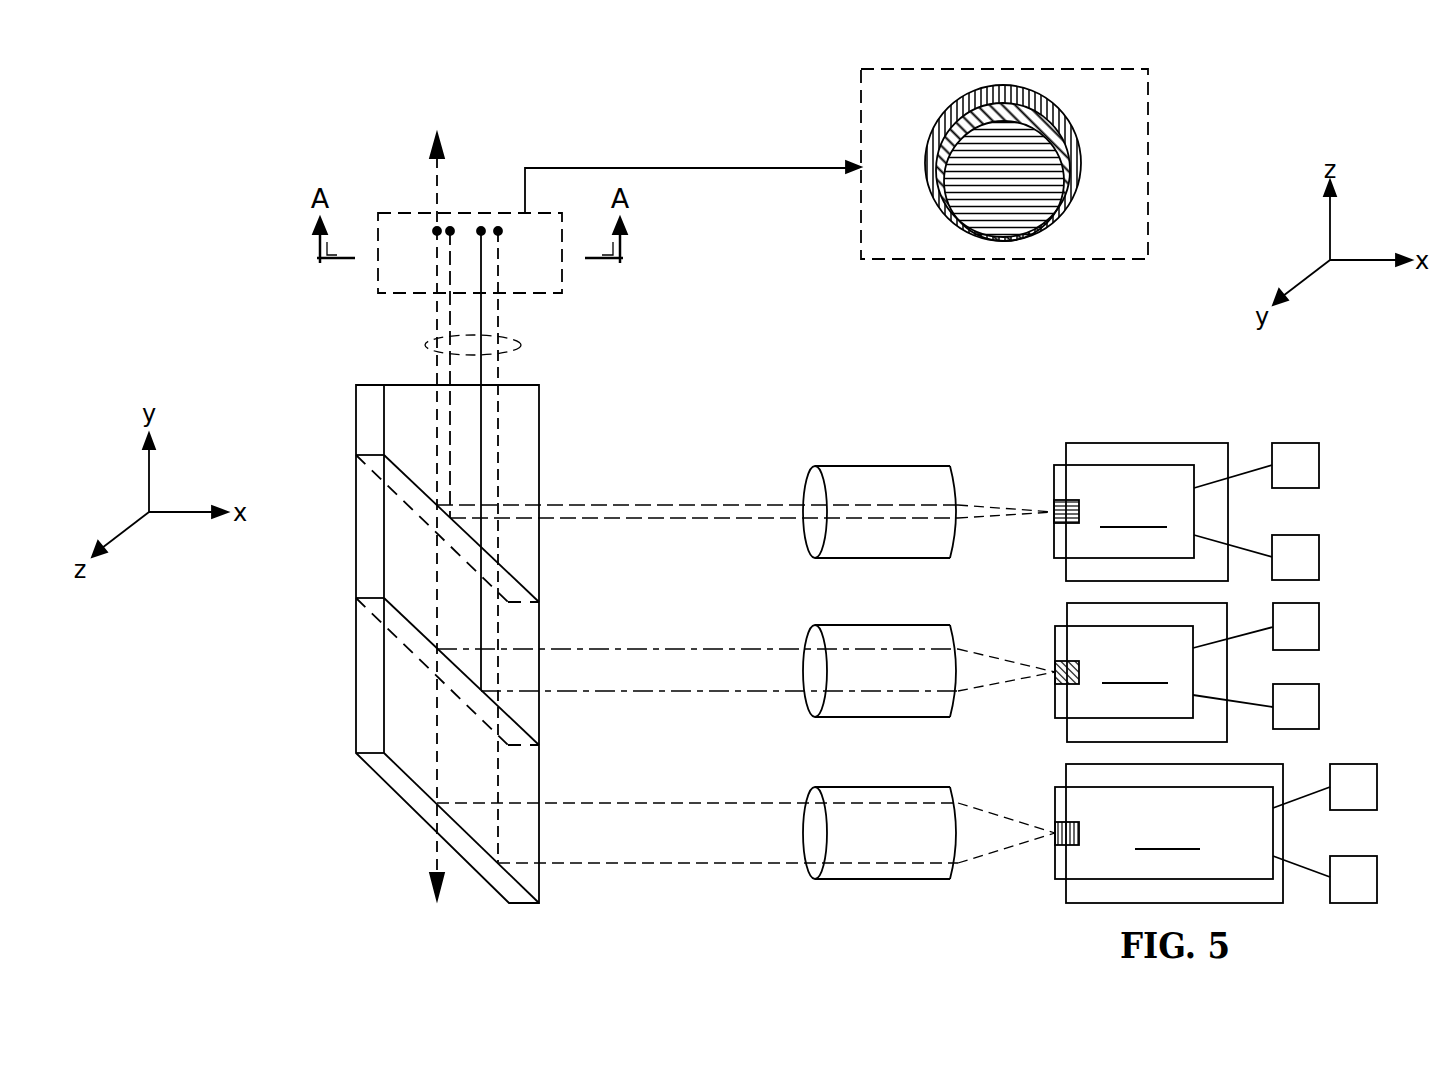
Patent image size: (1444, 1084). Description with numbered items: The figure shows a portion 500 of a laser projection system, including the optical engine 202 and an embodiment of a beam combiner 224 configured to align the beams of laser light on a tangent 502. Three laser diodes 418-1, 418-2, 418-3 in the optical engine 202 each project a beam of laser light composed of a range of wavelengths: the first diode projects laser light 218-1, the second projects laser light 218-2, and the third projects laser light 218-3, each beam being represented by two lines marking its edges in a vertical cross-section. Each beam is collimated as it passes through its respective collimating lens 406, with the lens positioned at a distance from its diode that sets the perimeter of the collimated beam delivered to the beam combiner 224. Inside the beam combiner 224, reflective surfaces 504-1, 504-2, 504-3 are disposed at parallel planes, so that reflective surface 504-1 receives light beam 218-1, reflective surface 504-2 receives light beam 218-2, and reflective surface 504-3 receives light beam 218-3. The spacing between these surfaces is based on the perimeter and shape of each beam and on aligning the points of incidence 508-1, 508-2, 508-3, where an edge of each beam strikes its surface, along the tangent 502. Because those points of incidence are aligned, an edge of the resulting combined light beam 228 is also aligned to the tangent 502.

The portion of the laser projection system 500 is at (210, 124).
The tangent 502 is at (434, 181).
The beam combiner 224 is at (402, 385).
The combined light beam 228 is at (522, 345).
The reflective surface 504-1 is at (380, 761).
The reflective surface 504-2 is at (375, 607).
The reflective surface 504-3 is at (372, 460).
The point of incidence 508-1 is at (435, 804).
The point of incidence 508-2 is at (435, 650).
The point of incidence 508-3 is at (435, 506).
The laser light 218-1 is at (667, 865).
The laser light 218-2 is at (645, 693).
The laser light 218-3 is at (658, 520).
The collimating lens 406 is at (880, 880).
The laser diode 418-1 is at (1216, 833).
The laser diode 418-2 is at (1187, 672).
The laser diode 418-3 is at (1186, 512).
The optical engine 202 is at (1341, 364).